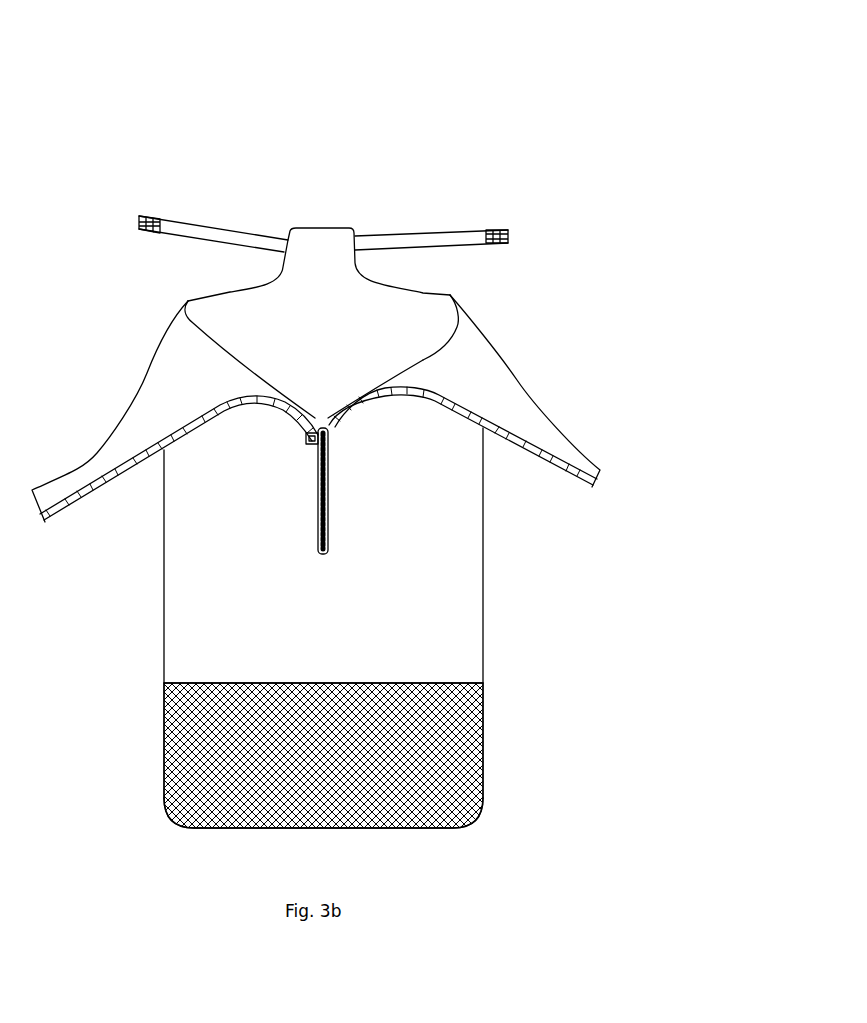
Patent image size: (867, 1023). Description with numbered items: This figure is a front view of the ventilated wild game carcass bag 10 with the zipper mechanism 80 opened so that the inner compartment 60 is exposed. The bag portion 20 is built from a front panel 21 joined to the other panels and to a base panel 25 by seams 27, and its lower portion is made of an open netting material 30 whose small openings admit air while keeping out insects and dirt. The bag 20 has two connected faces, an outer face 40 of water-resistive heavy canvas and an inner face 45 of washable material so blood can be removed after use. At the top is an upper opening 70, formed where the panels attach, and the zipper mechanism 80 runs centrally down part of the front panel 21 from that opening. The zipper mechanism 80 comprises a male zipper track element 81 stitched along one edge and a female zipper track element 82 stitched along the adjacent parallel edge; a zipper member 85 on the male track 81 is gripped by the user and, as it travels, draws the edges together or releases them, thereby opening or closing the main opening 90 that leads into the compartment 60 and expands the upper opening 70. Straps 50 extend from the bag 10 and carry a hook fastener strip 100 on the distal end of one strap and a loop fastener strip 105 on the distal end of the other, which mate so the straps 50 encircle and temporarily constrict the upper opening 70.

The ventilated wild game carcass bag 10 is at (487, 120).
The bag portion 20 is at (565, 420).
The front panel 21 is at (467, 585).
The base panel 25 is at (258, 827).
The seams 27 is at (163, 548).
The open netting material 30 is at (450, 777).
The outer face 40 is at (200, 632).
The inner face 45 is at (162, 398).
The straps 50 is at (202, 218).
The inner compartment 60 is at (330, 333).
The upper opening 70 is at (335, 225).
The zipper mechanism 80 is at (312, 527).
The male zipper track element 81 is at (582, 473).
The female zipper track element 82 is at (137, 462).
The zipper member 85 is at (308, 442).
The main opening 90 is at (324, 416).
The hook fastener strip 100 is at (497, 230).
The loop fastener strip 105 is at (140, 218).